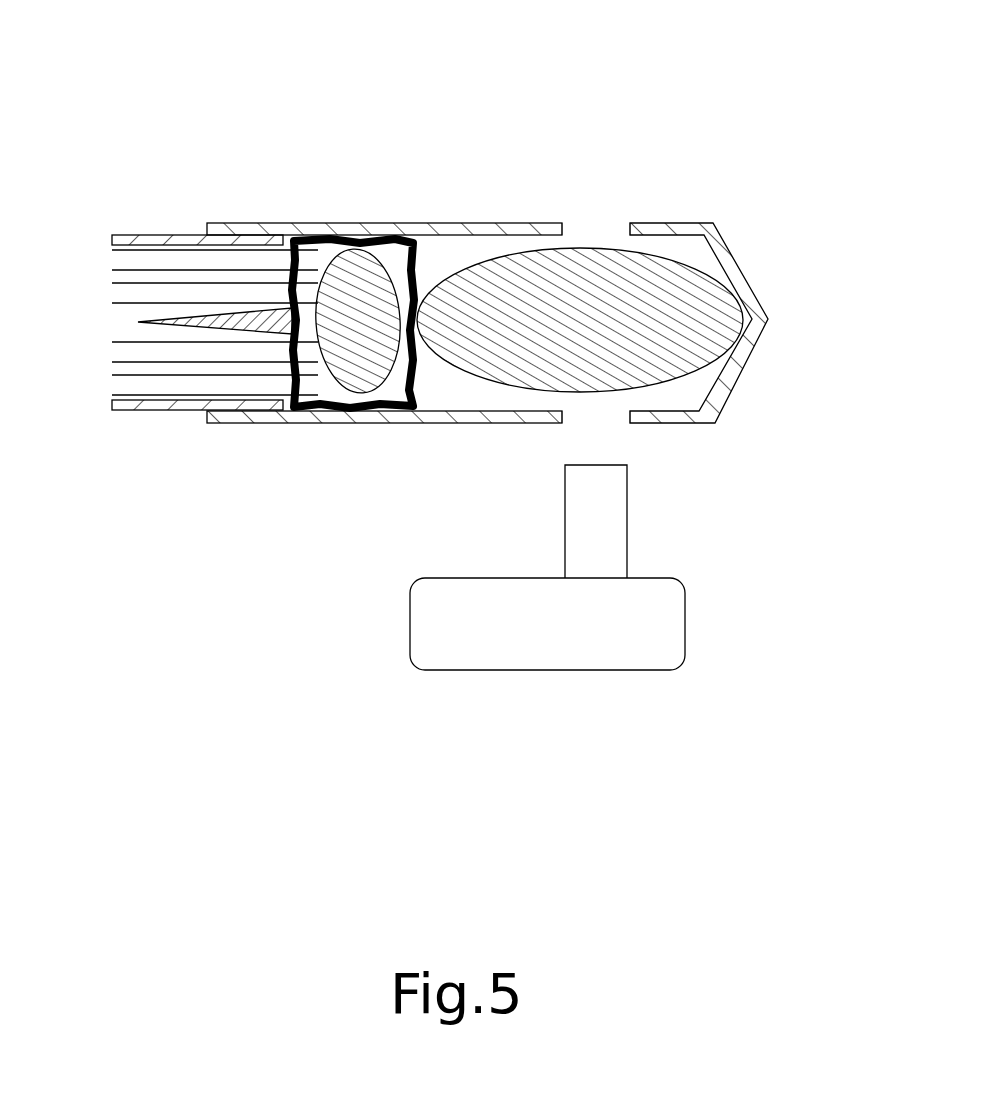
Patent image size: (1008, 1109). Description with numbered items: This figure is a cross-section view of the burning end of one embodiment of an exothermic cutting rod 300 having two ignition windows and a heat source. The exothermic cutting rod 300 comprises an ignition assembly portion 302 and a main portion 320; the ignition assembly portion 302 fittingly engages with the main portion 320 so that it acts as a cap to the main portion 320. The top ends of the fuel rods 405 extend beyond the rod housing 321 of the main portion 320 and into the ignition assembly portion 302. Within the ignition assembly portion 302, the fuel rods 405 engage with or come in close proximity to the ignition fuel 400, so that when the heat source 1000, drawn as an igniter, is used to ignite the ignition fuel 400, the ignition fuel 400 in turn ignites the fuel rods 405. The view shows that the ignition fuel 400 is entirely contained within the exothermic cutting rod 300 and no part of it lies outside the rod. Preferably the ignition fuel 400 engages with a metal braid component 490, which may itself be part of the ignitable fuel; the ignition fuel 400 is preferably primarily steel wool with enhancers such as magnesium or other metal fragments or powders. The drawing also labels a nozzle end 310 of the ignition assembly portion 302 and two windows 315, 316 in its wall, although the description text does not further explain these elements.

The exothermic cutting rod 300 is at (466, 102).
The ignition assembly portion 302 is at (720, 198).
The nozzle end cone 310 is at (755, 345).
The upper vent opening 315 is at (610, 212).
The lower vent opening 316 is at (613, 430).
The main portion 320 is at (135, 210).
The rod housing 321 is at (131, 412).
The fuel rods 405 is at (178, 257).
The ignition fuel 400 is at (252, 320).
The metal braid component 490 is at (408, 248).
The heat source 1000 is at (665, 670).